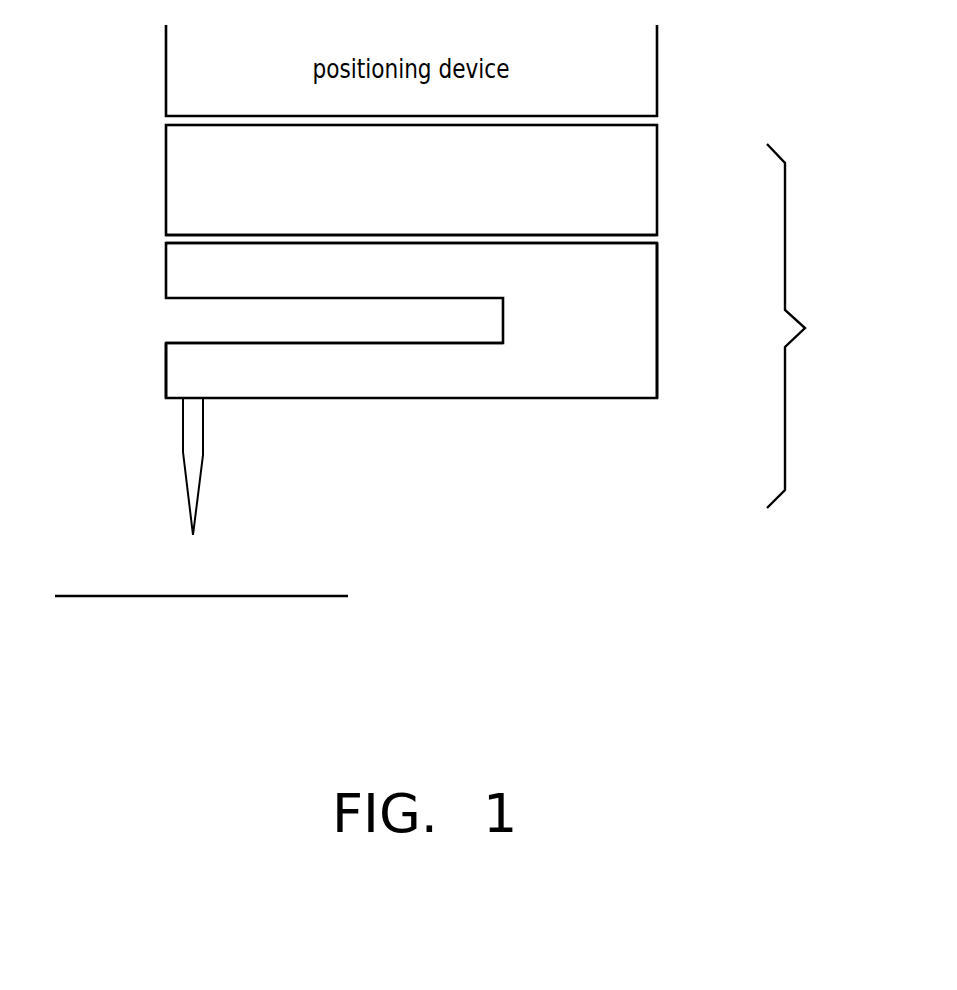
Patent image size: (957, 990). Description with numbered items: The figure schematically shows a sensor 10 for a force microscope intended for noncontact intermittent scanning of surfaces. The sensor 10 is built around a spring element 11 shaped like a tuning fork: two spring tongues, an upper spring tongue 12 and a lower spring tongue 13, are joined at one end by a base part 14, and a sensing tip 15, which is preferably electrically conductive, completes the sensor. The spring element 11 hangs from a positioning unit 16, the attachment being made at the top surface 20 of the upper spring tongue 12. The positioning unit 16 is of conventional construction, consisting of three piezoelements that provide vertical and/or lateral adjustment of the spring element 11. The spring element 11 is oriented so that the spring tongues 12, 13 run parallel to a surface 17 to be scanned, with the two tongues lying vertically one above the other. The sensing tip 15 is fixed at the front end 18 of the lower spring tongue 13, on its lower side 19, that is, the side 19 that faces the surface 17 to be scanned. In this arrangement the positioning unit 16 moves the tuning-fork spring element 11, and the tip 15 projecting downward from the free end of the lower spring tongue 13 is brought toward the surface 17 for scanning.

The sensor 10 is at (807, 326).
The spring element 11 is at (661, 310).
The upper spring tongue 12 is at (287, 273).
The lower spring tongue 13 is at (270, 375).
The base part 14 is at (580, 323).
The sensing tip 15 is at (201, 504).
The positioning unit 16 is at (661, 161).
The surface to be scanned 17 is at (211, 599).
The front end 18 is at (205, 378).
The lower side 19 is at (206, 401).
The top surface 20 is at (292, 242).